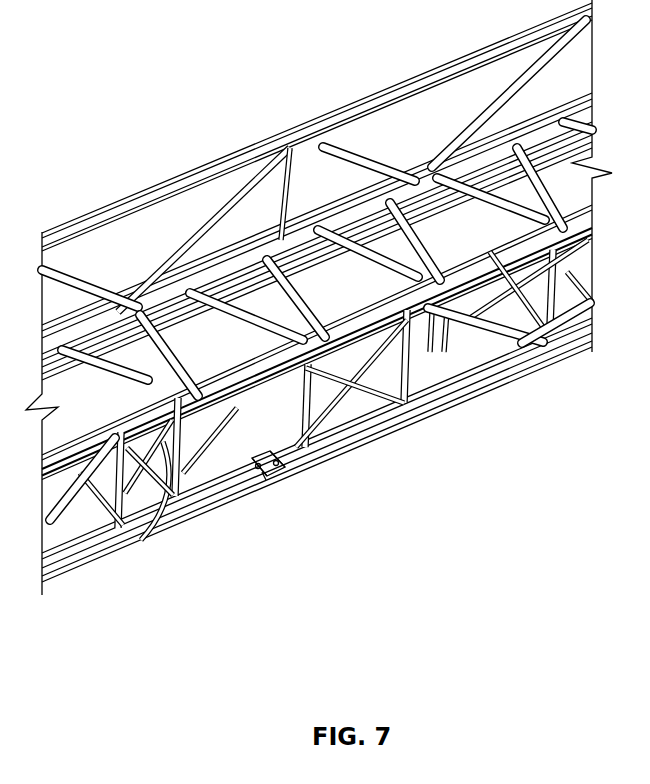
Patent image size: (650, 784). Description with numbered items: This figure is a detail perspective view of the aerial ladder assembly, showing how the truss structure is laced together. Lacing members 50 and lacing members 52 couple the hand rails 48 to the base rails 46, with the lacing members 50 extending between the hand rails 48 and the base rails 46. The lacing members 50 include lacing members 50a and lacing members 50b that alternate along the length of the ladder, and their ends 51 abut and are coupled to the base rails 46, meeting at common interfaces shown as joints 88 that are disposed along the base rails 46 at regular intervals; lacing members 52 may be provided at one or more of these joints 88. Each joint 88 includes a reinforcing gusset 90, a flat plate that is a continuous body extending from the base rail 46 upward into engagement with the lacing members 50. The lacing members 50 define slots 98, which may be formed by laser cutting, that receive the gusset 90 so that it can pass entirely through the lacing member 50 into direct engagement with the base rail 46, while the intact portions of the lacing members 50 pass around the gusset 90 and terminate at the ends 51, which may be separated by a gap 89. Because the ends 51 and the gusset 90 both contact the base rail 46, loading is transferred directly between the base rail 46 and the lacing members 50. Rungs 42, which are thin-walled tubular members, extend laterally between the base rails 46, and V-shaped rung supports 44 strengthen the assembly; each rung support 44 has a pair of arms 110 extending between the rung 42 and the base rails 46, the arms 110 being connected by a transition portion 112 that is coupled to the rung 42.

The rung 42 is at (413, 238).
The rung support 44 is at (373, 253).
The base rail 46 is at (335, 208).
The hand rail 48 is at (448, 66).
The lacing member 50 is at (187, 253).
The lacing member 50a is at (143, 510).
The lacing member 50b is at (340, 387).
The end 51 is at (267, 480).
The lacing member 52 is at (113, 447).
The joint 88 is at (290, 487).
The gap 89 is at (255, 460).
The gusset 90 is at (270, 453).
The slot 98 is at (253, 477).
The arm 110 is at (243, 315).
The transition portion 112 is at (413, 287).